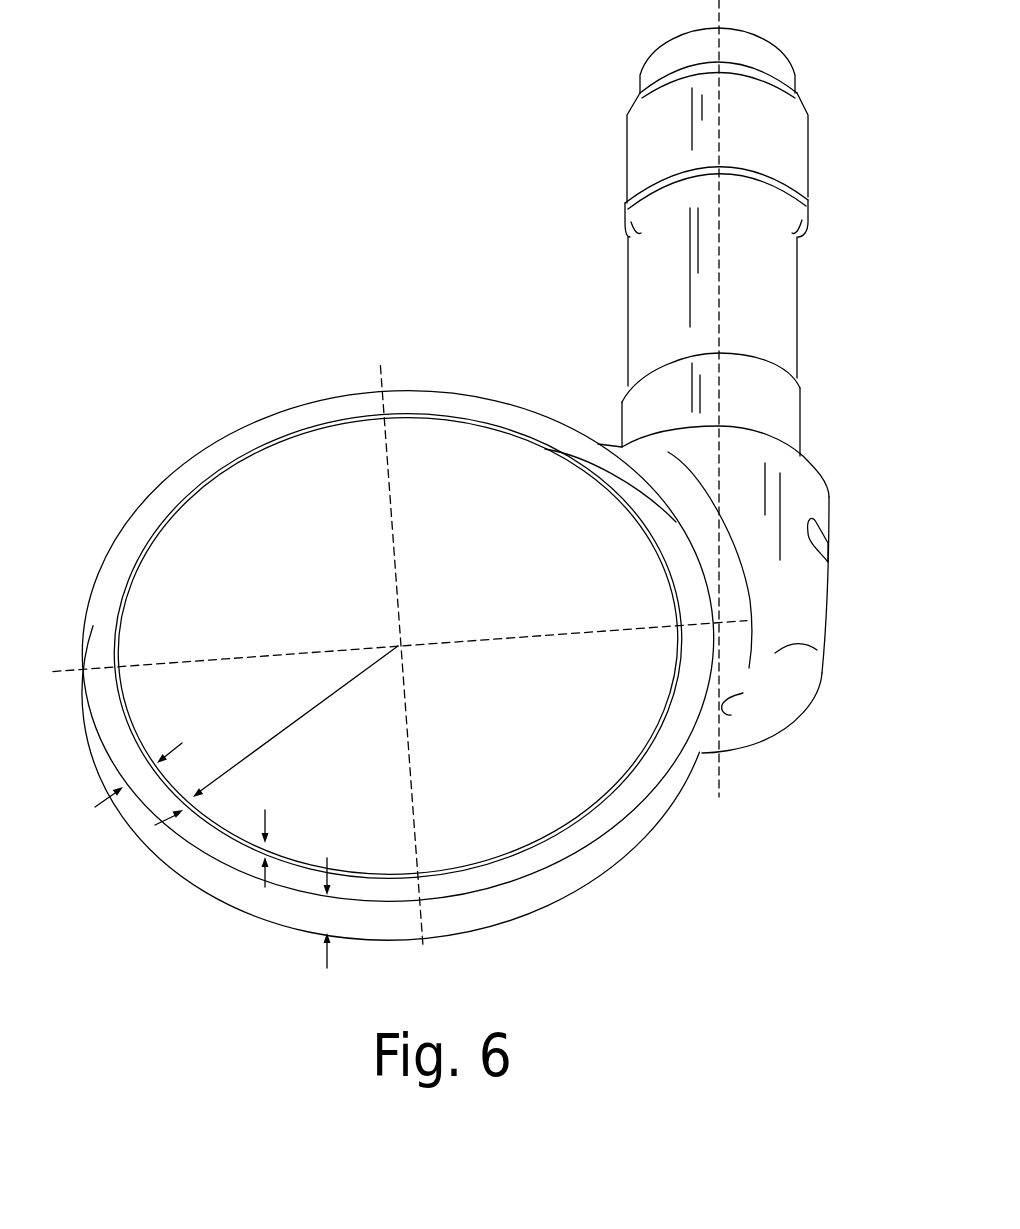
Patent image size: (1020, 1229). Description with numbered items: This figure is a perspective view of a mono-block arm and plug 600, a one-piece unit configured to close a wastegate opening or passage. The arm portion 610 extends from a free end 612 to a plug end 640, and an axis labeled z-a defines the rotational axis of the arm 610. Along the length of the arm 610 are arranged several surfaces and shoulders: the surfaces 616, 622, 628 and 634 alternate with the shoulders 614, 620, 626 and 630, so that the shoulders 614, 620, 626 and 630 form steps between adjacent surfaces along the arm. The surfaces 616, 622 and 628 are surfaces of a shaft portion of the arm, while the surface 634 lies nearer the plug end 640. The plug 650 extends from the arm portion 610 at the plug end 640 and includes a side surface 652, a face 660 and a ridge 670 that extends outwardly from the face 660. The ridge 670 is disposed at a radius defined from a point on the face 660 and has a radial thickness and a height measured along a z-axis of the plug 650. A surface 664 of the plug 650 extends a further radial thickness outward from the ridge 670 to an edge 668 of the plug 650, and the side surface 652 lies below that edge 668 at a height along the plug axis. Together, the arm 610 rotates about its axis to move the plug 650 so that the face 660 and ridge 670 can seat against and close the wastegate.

The mono-block arm and plug 600 is at (356, 167).
The arm portion 610 is at (598, 166).
The free end 612 is at (643, 70).
The shoulder 614 is at (640, 96).
The surface 616 is at (717, 145).
The shoulder 620 is at (624, 230).
The surface 622 is at (712, 297).
The shoulder 626 is at (648, 368).
The surface 628 is at (711, 409).
The shoulder 630 is at (638, 447).
The surface 634 is at (687, 561).
The plug end 640 is at (760, 717).
The plug 650 is at (284, 394).
The side surface 652 is at (192, 867).
The face 660 is at (400, 656).
The surface 664 is at (230, 448).
The edge 668 is at (170, 478).
The ridge 670 is at (613, 797).